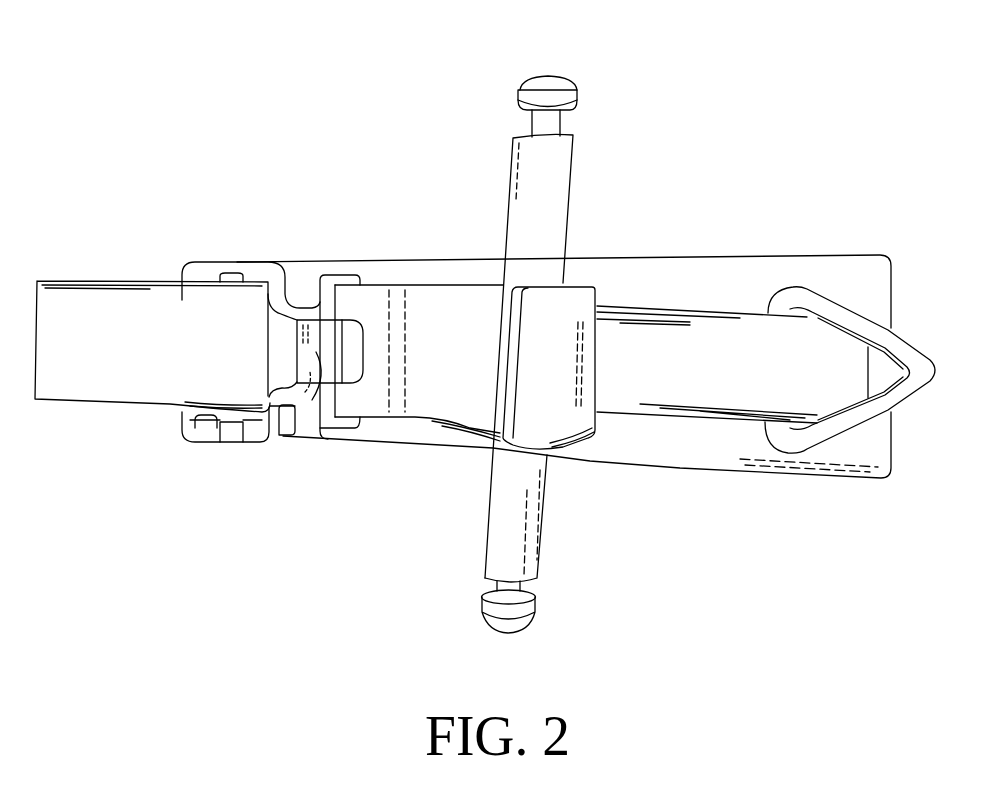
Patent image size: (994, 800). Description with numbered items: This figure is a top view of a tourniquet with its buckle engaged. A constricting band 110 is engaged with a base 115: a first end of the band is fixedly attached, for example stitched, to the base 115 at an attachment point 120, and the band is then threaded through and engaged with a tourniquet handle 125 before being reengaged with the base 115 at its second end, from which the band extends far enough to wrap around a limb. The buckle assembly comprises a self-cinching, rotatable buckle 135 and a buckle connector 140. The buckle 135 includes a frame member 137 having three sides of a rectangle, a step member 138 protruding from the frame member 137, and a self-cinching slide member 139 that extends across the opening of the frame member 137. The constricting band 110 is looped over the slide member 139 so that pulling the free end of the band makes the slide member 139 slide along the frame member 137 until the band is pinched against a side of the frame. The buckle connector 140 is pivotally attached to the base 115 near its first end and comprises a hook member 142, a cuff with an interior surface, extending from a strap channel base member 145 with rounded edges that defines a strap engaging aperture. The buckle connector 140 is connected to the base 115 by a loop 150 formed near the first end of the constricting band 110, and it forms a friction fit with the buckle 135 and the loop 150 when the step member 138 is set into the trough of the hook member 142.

The constricting band 110 is at (77, 281).
The base 115 is at (428, 430).
The attachment point 120 is at (408, 310).
The tourniquet handle 125 is at (537, 160).
The self-cinching, rotatable buckle 135 is at (253, 440).
The frame member 137 is at (215, 267).
The step member 138 is at (307, 298).
The self-cinching slide member 139 is at (213, 435).
The buckle connector 140 is at (318, 352).
The hook member 142 is at (313, 380).
The strap channel base member 145 is at (342, 425).
The loop 150 is at (362, 277).